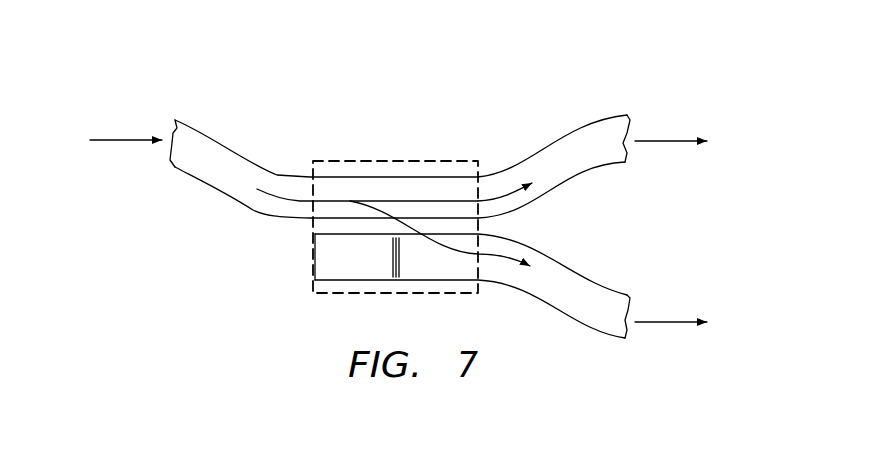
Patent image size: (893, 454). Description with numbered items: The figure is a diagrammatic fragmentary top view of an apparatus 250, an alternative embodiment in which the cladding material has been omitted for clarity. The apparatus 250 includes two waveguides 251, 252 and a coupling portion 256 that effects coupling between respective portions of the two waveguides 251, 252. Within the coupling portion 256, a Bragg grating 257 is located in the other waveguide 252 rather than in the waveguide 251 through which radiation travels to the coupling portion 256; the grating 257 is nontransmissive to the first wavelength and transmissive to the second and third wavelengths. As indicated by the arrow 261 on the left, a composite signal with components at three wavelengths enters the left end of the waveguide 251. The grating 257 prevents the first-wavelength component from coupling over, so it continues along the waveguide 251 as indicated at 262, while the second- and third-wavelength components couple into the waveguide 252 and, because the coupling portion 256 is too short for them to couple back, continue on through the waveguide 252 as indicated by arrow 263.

The apparatus 250 is at (293, 113).
The waveguide 251 is at (530, 163).
The waveguide 252 is at (572, 320).
The coupling portion 256 is at (377, 160).
The Bragg grating 257 is at (388, 259).
The arrow 261 is at (124, 145).
The λ1 output indication 262 is at (670, 145).
The arrow 263 is at (670, 325).